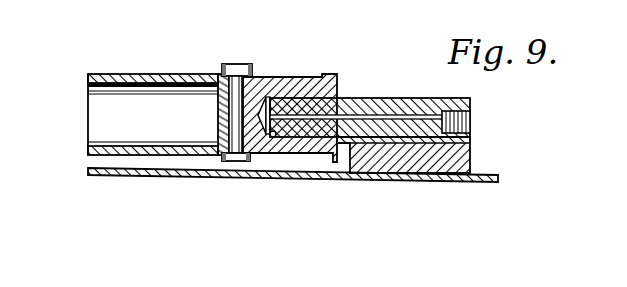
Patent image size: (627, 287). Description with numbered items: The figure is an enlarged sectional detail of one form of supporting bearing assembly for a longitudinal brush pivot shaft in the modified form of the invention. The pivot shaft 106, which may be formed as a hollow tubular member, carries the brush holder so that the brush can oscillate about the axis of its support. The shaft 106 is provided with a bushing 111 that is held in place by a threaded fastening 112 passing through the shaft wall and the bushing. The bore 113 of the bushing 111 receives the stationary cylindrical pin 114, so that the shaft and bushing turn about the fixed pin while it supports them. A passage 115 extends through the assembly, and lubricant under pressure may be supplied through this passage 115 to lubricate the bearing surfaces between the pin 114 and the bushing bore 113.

The pivot shaft 106 is at (163, 74).
The bushing 111 is at (283, 88).
The threaded fastening 112 is at (234, 64).
The bore 113 is at (276, 137).
The stationary cylindrical pin 114 is at (369, 106).
The passage 115 is at (410, 119).